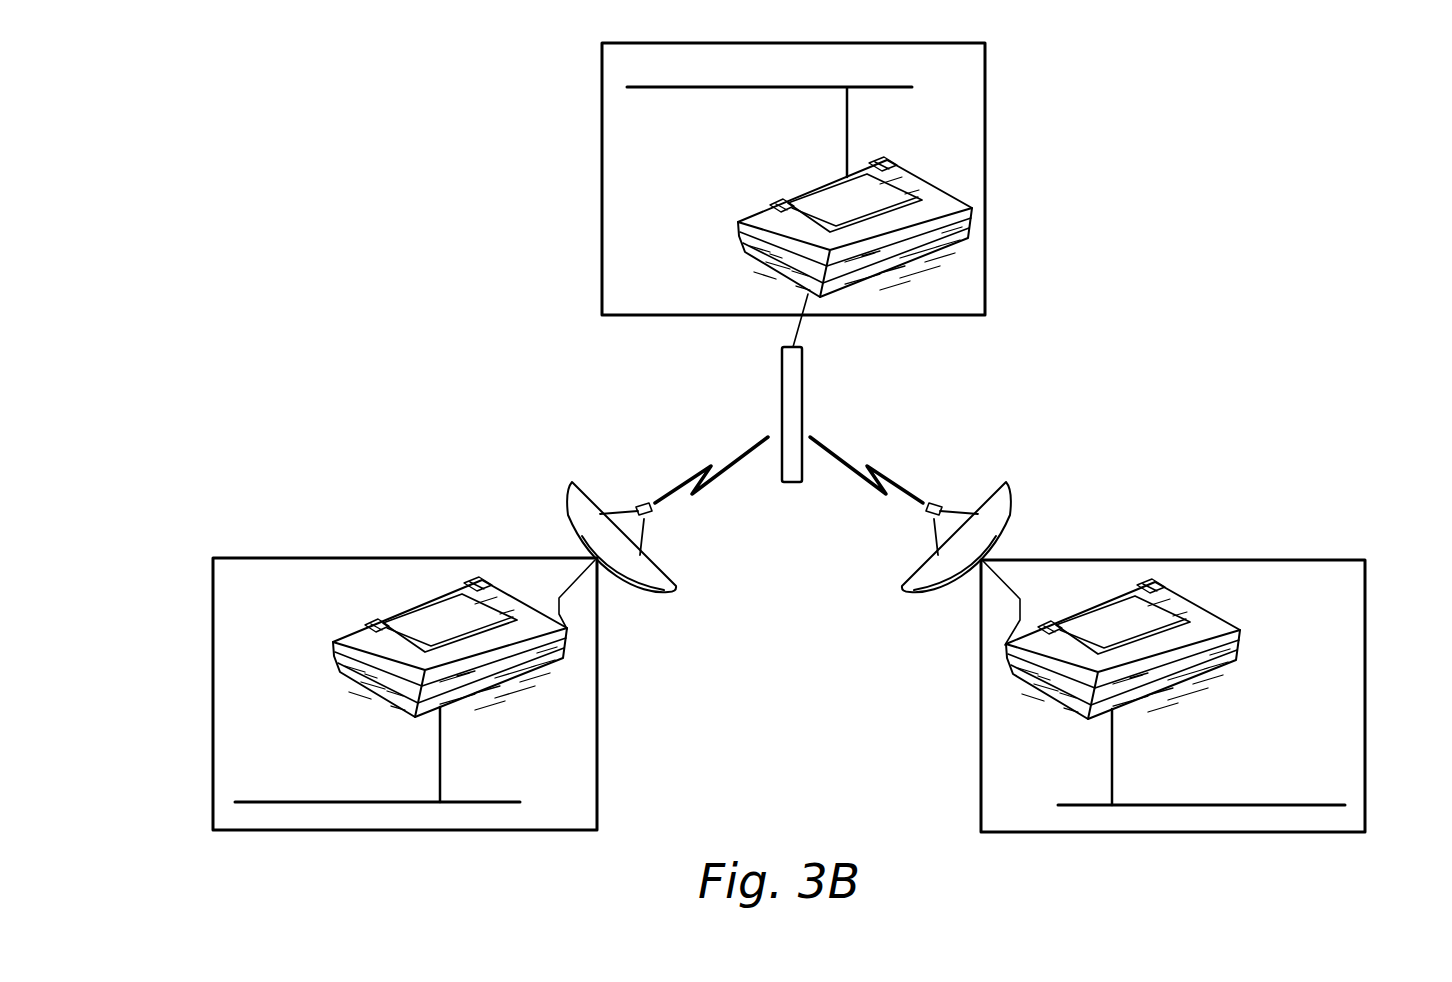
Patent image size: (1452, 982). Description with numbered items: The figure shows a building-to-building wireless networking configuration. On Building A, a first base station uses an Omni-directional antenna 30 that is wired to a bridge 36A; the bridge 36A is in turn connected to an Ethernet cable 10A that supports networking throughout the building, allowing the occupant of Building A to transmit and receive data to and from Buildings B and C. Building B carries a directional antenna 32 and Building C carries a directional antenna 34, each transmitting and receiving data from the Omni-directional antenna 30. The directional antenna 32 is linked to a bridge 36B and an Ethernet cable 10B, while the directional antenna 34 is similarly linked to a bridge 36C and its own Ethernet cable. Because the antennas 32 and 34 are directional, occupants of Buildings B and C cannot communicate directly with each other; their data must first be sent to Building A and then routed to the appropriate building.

The Ethernet cable 10A is at (893, 88).
The Ethernet cable 10B is at (350, 800).
The Omni-directional antenna 30 is at (780, 400).
The directional antenna 32 is at (568, 512).
The directional antenna 34 is at (1017, 515).
The bridge 36A is at (853, 161).
The bridge 36B is at (213, 698).
The bridge 36C is at (1365, 709).